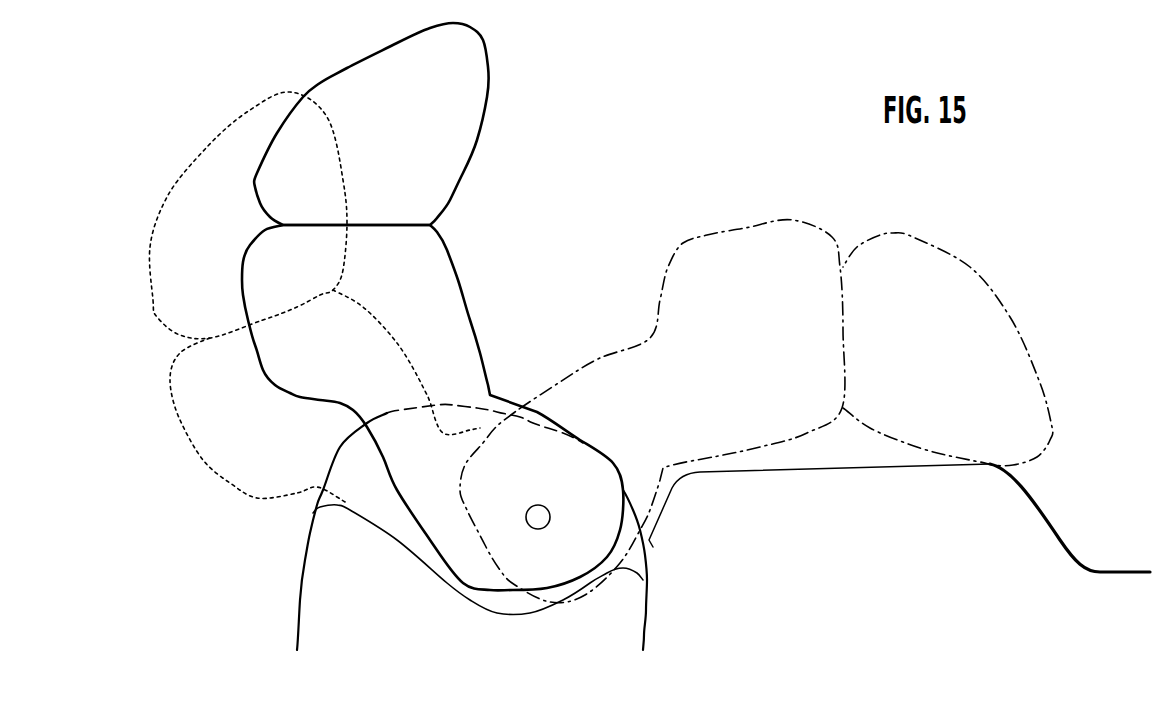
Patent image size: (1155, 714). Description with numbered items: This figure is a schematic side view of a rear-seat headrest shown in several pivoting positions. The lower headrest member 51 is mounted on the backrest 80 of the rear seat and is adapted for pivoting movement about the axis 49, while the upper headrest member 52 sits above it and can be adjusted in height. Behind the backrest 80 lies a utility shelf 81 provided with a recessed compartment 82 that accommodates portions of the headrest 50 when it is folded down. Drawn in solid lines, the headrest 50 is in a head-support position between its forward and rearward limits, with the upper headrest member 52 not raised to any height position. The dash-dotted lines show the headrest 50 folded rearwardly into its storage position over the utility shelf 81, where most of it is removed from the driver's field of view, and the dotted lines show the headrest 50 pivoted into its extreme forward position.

The axis 49 is at (542, 510).
The headrest 50 is at (236, 290).
The lower headrest member 51 is at (467, 327).
The upper headrest member 52 is at (457, 141).
The backrest 80 is at (313, 575).
The utility shelf 81 is at (780, 471).
The recessed compartment 82 is at (1055, 527).